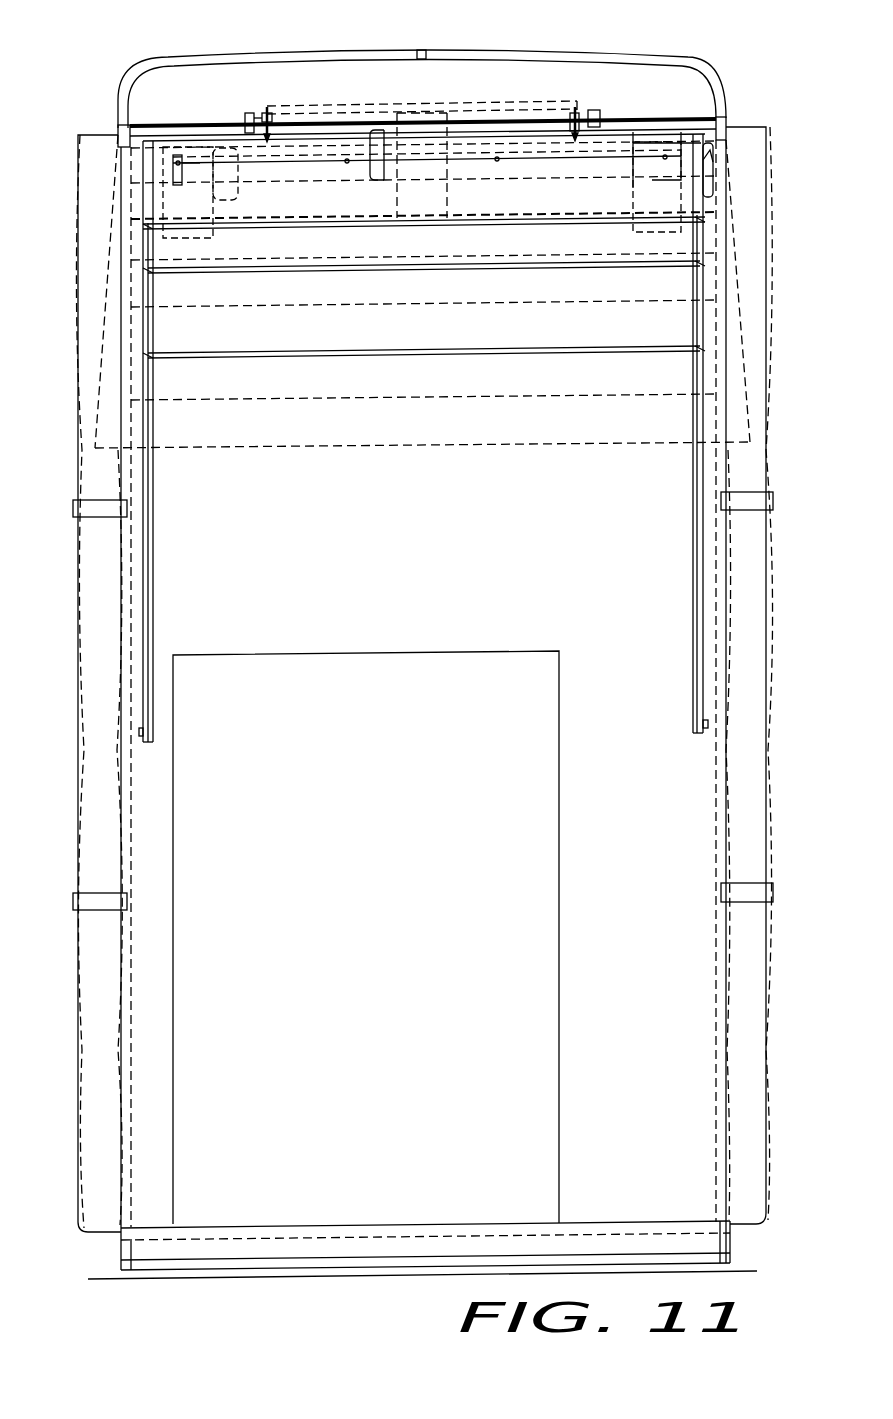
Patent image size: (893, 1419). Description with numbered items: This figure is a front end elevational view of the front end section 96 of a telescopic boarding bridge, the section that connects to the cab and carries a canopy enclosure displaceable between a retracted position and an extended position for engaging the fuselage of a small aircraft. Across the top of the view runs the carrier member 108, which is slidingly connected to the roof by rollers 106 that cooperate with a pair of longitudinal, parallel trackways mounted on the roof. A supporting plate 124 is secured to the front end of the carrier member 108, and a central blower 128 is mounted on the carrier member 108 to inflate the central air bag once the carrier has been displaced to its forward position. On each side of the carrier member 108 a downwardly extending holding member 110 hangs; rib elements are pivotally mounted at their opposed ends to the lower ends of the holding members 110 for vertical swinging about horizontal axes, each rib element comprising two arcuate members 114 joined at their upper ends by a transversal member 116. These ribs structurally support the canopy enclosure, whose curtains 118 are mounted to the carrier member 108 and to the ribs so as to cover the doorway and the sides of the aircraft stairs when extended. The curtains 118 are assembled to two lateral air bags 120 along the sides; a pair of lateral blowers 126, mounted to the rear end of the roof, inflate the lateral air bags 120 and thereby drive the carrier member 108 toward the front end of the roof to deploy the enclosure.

The front end section 96 is at (86, 106).
The rollers 106 is at (260, 107).
The carrier member 108 is at (487, 94).
The holding member 110 is at (153, 482).
The arcuate members 114 is at (148, 247).
The transversal member 116 is at (317, 223).
The curtains 118 is at (380, 422).
The lateral air bags 120 is at (98, 630).
The supporting plate 124 is at (610, 153).
The lateral blowers 126 is at (227, 173).
The central blower 128 is at (385, 140).